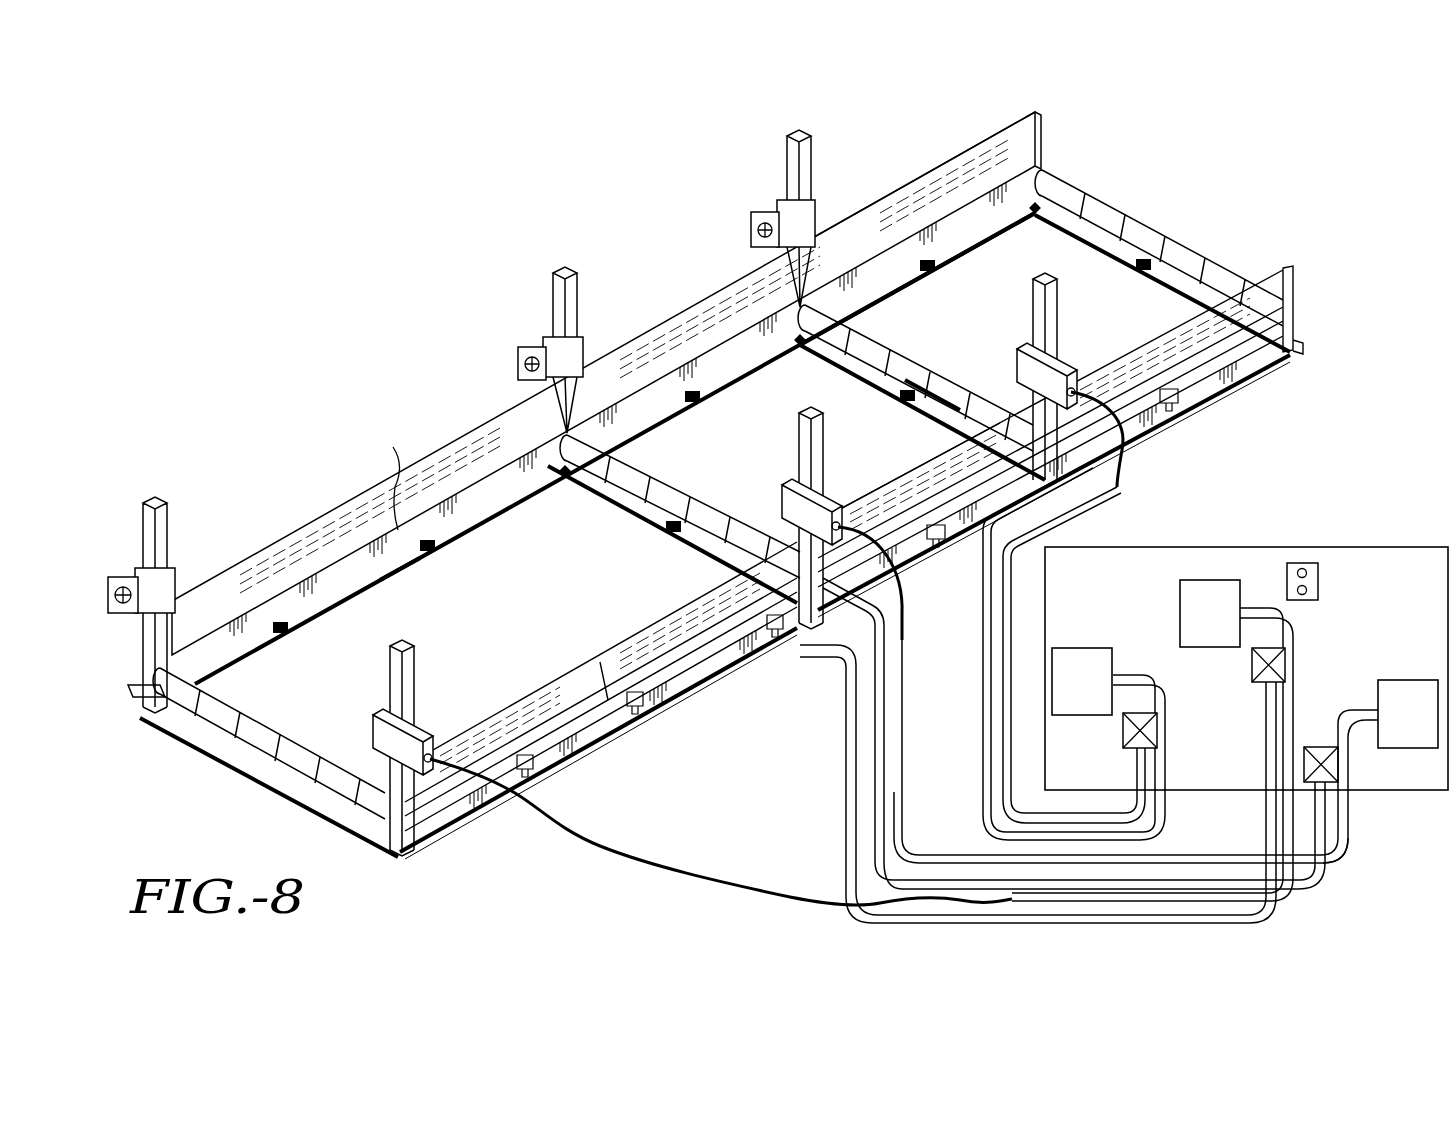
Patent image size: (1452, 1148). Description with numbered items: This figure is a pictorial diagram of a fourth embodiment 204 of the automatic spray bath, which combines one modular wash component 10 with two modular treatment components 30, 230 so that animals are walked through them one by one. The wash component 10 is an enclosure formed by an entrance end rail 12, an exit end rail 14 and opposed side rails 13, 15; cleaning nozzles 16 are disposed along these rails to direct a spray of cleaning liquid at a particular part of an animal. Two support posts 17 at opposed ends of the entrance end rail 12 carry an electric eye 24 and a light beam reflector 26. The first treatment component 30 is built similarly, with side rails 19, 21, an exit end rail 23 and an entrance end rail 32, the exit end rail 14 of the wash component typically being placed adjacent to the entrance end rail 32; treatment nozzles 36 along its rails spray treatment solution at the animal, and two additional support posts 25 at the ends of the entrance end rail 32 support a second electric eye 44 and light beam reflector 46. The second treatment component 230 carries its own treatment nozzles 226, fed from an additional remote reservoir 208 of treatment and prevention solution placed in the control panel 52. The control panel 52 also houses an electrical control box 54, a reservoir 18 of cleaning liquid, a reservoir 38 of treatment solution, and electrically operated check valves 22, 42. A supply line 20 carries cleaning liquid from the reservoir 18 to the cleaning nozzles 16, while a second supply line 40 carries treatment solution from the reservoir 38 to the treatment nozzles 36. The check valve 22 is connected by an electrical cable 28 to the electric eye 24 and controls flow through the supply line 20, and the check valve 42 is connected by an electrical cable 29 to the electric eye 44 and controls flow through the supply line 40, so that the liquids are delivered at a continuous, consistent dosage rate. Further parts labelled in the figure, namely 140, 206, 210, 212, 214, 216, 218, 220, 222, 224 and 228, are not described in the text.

The wash component 10 is at (317, 453).
The entrance end rail 12 is at (253, 760).
The side rail 13 is at (391, 478).
The exit end rail 14 is at (693, 540).
The side rail 15 is at (480, 747).
The cleaning nozzles 16 is at (437, 572).
The support posts 17 is at (155, 497).
The reservoir 18 is at (1205, 580).
The side rail 19 is at (650, 357).
The supply line 20 is at (1282, 835).
The side rail 21 is at (890, 500).
The electrically operated check valve 22 is at (1250, 662).
The exit end rail 23 is at (928, 408).
The electric eye 24 is at (437, 717).
The support posts 25 is at (563, 267).
The light beam reflector 26 is at (122, 573).
The electrical cable 28 is at (767, 893).
The electrical cable 29 is at (1343, 858).
The treatment component 30 is at (685, 303).
The entrance end rail 32 is at (645, 445).
The treatment nozzles 36 is at (713, 400).
The reservoir 38 is at (1410, 680).
The second supply line 40 is at (1347, 832).
The electrically operated check valve 42 is at (1317, 747).
The second electric eye 44 is at (843, 490).
The light beam reflector 46 is at (515, 340).
The control panel 52 is at (1360, 545).
The electrical control box 54 is at (1320, 582).
The hose section 140 is at (397, 580).
The fourth embodiment 204 is at (480, 195).
The front rail section 206 is at (1123, 367).
The remote reservoir 208 is at (1080, 647).
The back panel section 210 is at (903, 207).
The valve 212 is at (1123, 732).
The conduit 214 is at (1138, 758).
The end cross pipe 216 is at (1093, 220).
The post 218 is at (797, 132).
The conduit 220 is at (1167, 768).
The cross pipe 222 is at (877, 325).
The post 224 is at (1048, 275).
The treatment nozzles 226 is at (947, 267).
The connector box 228 is at (1077, 357).
The treatment component 230 is at (937, 160).